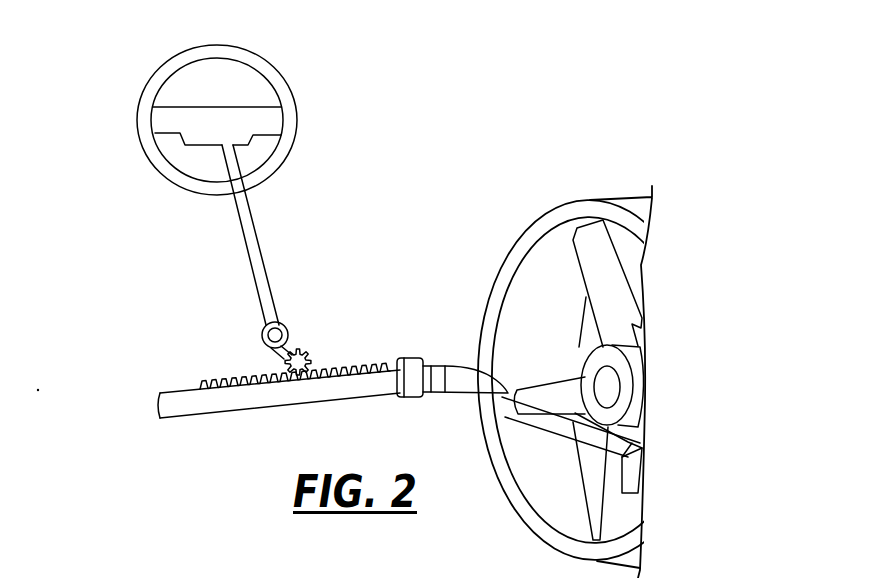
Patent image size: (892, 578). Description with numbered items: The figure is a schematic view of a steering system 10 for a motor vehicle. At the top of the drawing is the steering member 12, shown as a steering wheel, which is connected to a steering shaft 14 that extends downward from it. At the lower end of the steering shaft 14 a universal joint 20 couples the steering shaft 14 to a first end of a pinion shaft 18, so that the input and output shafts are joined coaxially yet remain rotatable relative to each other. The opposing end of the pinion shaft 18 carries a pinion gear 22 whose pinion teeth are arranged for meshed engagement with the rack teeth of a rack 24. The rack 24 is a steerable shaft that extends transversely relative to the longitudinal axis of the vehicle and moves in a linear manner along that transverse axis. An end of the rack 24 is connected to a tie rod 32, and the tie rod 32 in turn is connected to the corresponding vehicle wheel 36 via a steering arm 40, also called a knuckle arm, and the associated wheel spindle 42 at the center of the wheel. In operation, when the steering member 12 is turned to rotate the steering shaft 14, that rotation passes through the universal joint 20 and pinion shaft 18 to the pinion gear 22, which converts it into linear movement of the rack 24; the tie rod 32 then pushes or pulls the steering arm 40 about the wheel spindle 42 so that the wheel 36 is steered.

The steering system 10 is at (403, 187).
The steering member 12 is at (157, 158).
The steering shaft 14 is at (245, 220).
The pinion shaft 18 is at (294, 336).
The universal joint 20 is at (263, 332).
The pinion gear 22 is at (314, 361).
The rack 24 is at (227, 383).
The tie rods 32 is at (464, 366).
The vehicle wheels 36 is at (532, 245).
The steering arms 40 is at (512, 428).
The wheel spindle 42 is at (588, 372).